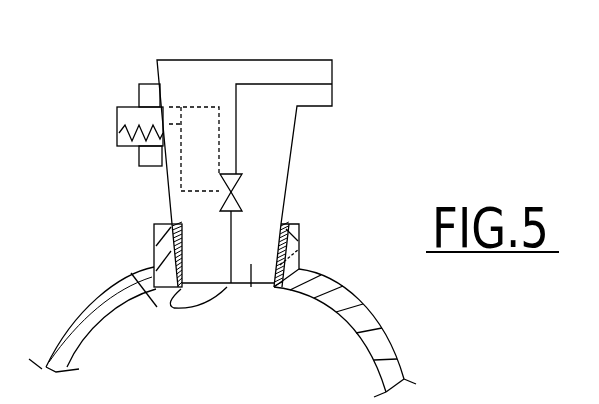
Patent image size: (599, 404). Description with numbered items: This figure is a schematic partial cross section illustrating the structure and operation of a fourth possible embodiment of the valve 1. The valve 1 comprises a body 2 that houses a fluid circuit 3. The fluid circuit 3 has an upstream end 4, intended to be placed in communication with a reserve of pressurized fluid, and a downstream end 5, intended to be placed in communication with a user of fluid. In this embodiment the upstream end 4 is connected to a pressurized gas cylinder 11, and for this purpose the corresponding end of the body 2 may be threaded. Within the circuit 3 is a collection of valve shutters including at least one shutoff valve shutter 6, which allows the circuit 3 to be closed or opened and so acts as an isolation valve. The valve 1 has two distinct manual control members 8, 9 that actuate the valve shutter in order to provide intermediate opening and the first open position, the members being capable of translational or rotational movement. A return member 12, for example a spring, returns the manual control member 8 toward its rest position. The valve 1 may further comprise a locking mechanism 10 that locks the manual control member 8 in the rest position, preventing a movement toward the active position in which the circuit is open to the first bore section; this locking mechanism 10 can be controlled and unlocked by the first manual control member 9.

The valve 1 is at (323, 170).
The body 2 is at (252, 290).
The fluid circuit 3 is at (288, 86).
The upstream end 4 is at (132, 274).
The downstream end 5 is at (334, 86).
The shutoff valve shutter 6 is at (222, 203).
The manual control member 8 is at (132, 81).
The first manual control member 9 is at (118, 115).
The locking mechanism 10 is at (170, 124).
The pressurized gas cylinder 11 is at (388, 332).
The return member 12 is at (119, 140).